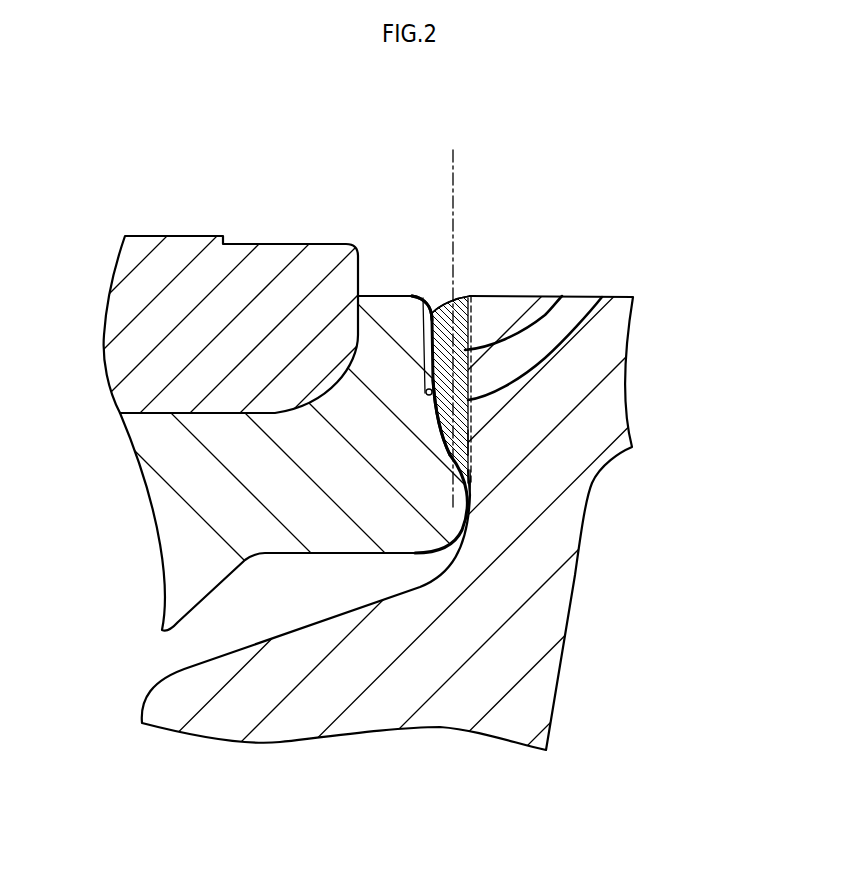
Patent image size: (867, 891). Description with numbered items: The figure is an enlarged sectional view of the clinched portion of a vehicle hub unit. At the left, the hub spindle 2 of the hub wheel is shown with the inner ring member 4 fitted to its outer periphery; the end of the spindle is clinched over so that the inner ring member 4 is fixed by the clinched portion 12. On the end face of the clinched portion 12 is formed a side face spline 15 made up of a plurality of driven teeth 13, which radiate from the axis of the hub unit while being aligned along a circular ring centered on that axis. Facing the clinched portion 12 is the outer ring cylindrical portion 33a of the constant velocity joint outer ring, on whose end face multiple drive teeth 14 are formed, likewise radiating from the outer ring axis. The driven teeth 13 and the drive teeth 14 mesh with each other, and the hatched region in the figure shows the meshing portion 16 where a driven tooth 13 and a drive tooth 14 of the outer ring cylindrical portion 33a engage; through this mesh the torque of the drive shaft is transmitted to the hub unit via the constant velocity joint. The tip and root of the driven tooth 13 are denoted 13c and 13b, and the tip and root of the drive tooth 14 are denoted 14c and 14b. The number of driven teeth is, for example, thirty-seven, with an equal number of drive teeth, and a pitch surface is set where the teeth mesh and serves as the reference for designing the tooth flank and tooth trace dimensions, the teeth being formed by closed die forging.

The hub spindle 2 is at (202, 490).
The inner ring member 4 is at (203, 265).
The clinched portion 12 is at (383, 313).
The driven tooth 13 is at (440, 317).
The root of the driven tooth 13b is at (443, 407).
The tip of the driven tooth 13c is at (472, 442).
The drive tooth 14 is at (458, 318).
The root of the drive tooth 14b is at (472, 472).
The tip of the drive tooth 14c is at (602, 297).
The side face spline 15 is at (414, 280).
The meshing portion 16 is at (562, 296).
The outer ring cylindrical portion 33a is at (608, 357).